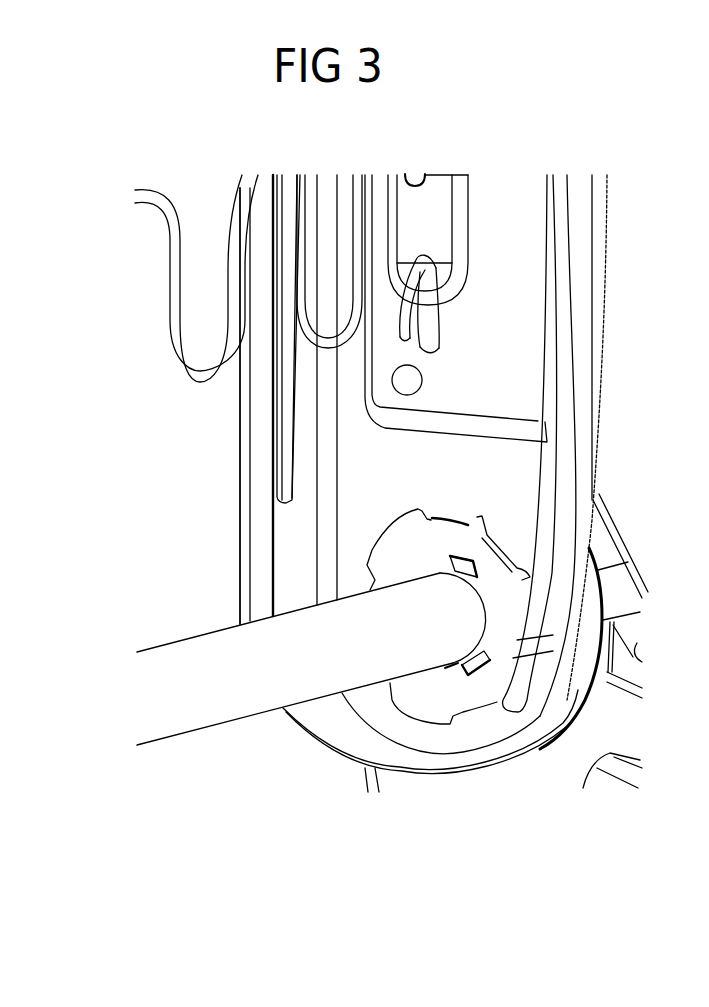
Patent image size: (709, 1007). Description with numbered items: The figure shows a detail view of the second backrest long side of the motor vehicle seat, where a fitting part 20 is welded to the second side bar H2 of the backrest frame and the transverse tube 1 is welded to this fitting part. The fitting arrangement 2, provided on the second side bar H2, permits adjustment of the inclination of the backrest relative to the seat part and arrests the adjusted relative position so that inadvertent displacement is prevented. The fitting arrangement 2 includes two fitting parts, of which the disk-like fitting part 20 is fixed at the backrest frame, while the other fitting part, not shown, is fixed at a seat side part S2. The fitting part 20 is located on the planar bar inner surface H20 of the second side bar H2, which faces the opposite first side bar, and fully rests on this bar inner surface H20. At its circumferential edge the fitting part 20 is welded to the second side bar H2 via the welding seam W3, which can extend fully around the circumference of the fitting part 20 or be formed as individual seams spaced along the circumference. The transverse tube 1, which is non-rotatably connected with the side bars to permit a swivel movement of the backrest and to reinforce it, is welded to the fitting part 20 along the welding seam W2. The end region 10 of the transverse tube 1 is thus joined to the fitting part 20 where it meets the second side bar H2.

The transverse tube 1 is at (245, 718).
The fitting arrangement 2 is at (602, 540).
The rod end 10 is at (410, 600).
The fitting part 20 is at (478, 555).
The second side bar H2 is at (532, 171).
The bar inner surface H20 is at (417, 475).
The welding seam W2 is at (446, 675).
The welding seam W3 is at (450, 511).
The seat side part S2 is at (623, 726).